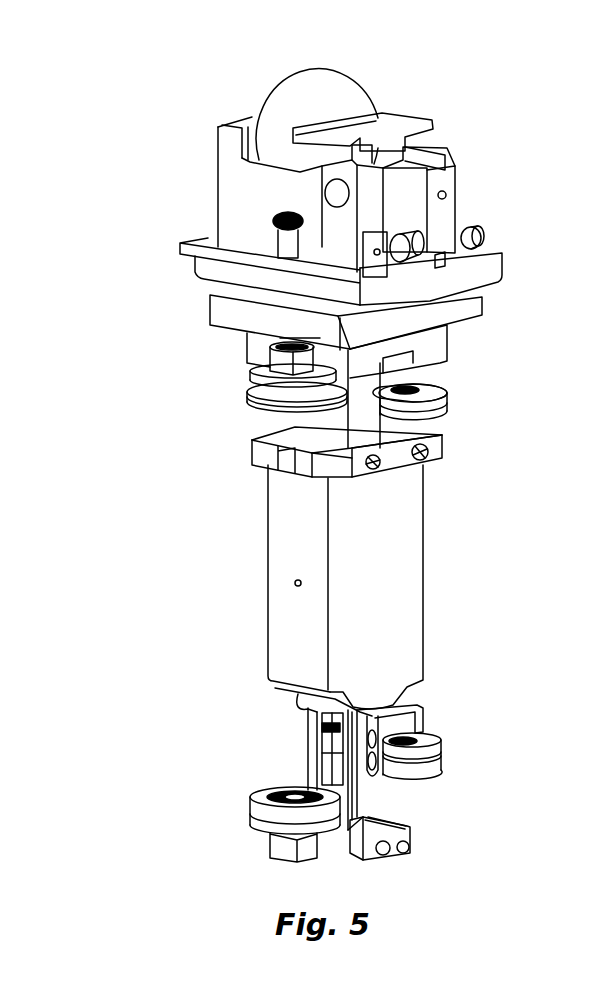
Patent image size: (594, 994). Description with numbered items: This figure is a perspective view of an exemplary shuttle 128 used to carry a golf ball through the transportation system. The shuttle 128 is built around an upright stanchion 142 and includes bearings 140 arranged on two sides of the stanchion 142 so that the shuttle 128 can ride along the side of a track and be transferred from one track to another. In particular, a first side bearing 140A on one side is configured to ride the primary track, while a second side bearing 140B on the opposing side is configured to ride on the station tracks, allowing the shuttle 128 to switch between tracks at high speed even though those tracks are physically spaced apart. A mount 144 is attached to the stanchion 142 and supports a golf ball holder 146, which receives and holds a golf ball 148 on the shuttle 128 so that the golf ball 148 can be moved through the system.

The shuttle 128 is at (161, 489).
The bearings 140 is at (250, 396).
The first side bearing 140A is at (221, 722).
The second side bearing 140B is at (453, 687).
The stanchion 142 is at (413, 577).
The mount 144 is at (212, 327).
The golf ball holder 146 is at (167, 189).
The golf ball 148 is at (346, 86).